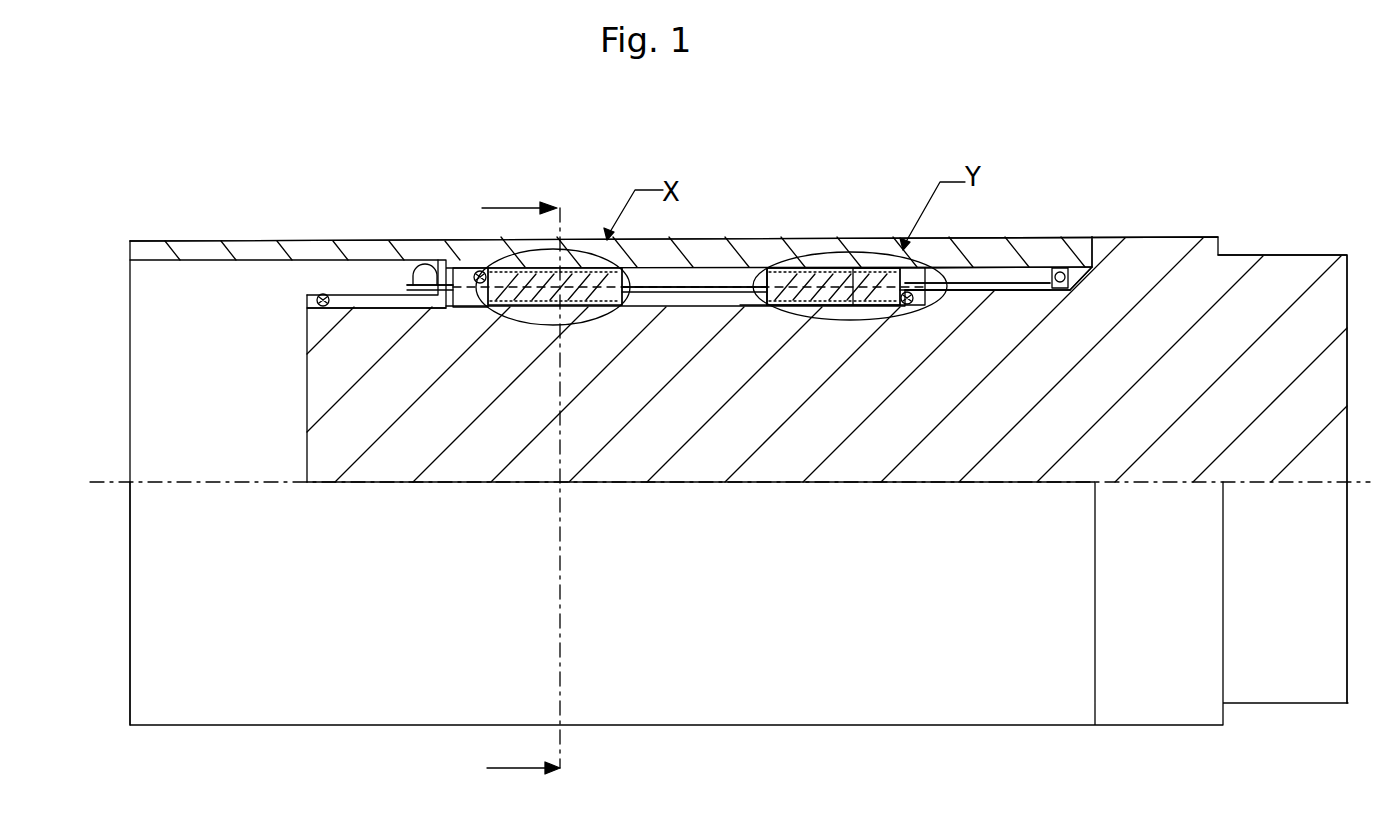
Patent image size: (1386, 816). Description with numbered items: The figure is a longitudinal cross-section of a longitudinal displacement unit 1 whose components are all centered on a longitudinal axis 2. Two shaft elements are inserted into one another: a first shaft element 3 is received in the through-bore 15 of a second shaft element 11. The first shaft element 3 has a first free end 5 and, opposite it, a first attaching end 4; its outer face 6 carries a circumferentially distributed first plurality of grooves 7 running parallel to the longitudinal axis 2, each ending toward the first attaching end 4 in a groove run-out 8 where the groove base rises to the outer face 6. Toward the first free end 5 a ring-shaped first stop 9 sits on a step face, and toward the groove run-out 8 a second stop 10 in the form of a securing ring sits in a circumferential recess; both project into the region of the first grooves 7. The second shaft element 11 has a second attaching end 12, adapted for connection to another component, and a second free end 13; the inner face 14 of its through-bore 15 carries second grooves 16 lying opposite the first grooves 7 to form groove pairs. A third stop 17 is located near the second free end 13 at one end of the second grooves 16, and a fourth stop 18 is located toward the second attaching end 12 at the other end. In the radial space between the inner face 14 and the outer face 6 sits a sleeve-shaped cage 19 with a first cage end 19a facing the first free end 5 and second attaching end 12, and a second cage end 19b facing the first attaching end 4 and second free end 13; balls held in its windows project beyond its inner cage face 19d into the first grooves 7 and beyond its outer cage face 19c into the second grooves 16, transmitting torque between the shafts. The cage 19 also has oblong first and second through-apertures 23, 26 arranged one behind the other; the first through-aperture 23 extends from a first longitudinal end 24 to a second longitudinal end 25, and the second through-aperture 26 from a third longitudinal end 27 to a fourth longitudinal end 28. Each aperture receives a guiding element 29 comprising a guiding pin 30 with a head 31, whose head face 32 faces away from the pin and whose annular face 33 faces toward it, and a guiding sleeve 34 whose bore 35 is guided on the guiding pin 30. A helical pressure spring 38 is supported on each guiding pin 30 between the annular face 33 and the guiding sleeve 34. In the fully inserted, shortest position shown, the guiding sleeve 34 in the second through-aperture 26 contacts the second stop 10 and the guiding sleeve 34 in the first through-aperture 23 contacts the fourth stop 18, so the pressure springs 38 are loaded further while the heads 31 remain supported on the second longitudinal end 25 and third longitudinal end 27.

The longitudinal displacement unit 1 is at (745, 184).
The longitudinal axis 2 is at (122, 483).
The first shaft element 3 is at (1012, 457).
The first attaching end 4 is at (1347, 255).
The first free end 5 is at (305, 302).
The outer face 6 is at (382, 296).
The first grooves 7 is at (310, 307).
The groove run-out 8 is at (975, 268).
The first stop 9 is at (315, 297).
The second stop 10 is at (907, 307).
The second shaft element 11 is at (303, 241).
The second attaching end 12 is at (130, 247).
The second free end 13 is at (1093, 250).
The inner face 14 is at (1017, 290).
The through-bore 15 is at (176, 402).
The second grooves 16 is at (722, 280).
The third stop 17 is at (1060, 270).
The fourth stop 18 is at (470, 268).
The cage 19 is at (985, 283).
The first cage end 19a is at (343, 310).
The second cage end 19b is at (993, 290).
The outer cage face 19c is at (430, 292).
The inner cage face 19d is at (672, 307).
The first through-aperture 23 is at (445, 302).
The first longitudinal end 24 is at (395, 483).
The second longitudinal end 25 is at (598, 305).
The second through-aperture 26 is at (925, 268).
The third longitudinal end 27 is at (800, 268).
The fourth longitudinal end 28 is at (860, 310).
The guiding element 29 is at (555, 268).
The guiding pin 30 is at (777, 313).
The head 31 is at (740, 290).
The head face 32 is at (764, 268).
The annular face 33 is at (752, 310).
The guiding sleeve 34 is at (870, 268).
The bore 35 is at (830, 307).
The pressure spring 38 is at (830, 268).